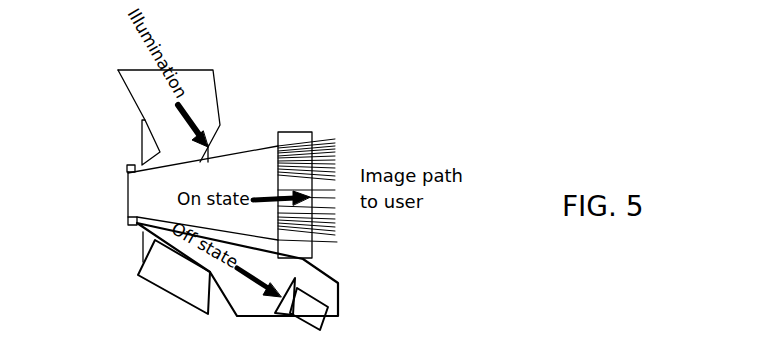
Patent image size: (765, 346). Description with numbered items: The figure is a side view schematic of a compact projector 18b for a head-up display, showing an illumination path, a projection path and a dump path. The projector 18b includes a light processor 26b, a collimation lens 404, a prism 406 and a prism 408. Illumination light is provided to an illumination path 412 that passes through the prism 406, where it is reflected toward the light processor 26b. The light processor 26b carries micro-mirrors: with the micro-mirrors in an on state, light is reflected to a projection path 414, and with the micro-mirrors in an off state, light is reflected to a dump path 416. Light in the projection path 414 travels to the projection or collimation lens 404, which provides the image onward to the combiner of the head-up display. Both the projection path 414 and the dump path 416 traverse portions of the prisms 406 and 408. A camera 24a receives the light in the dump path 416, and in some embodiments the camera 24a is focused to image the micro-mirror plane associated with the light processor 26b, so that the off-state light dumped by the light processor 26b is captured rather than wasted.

The projector 18b is at (293, 43).
The illumination path 412 is at (193, 77).
The prism 406 is at (140, 127).
The light processor 26b is at (130, 167).
The projection path 414 is at (252, 153).
The collimation lens 404 is at (300, 132).
The dump path 416 is at (317, 277).
The prism 408 is at (166, 294).
The camera 24a is at (323, 303).